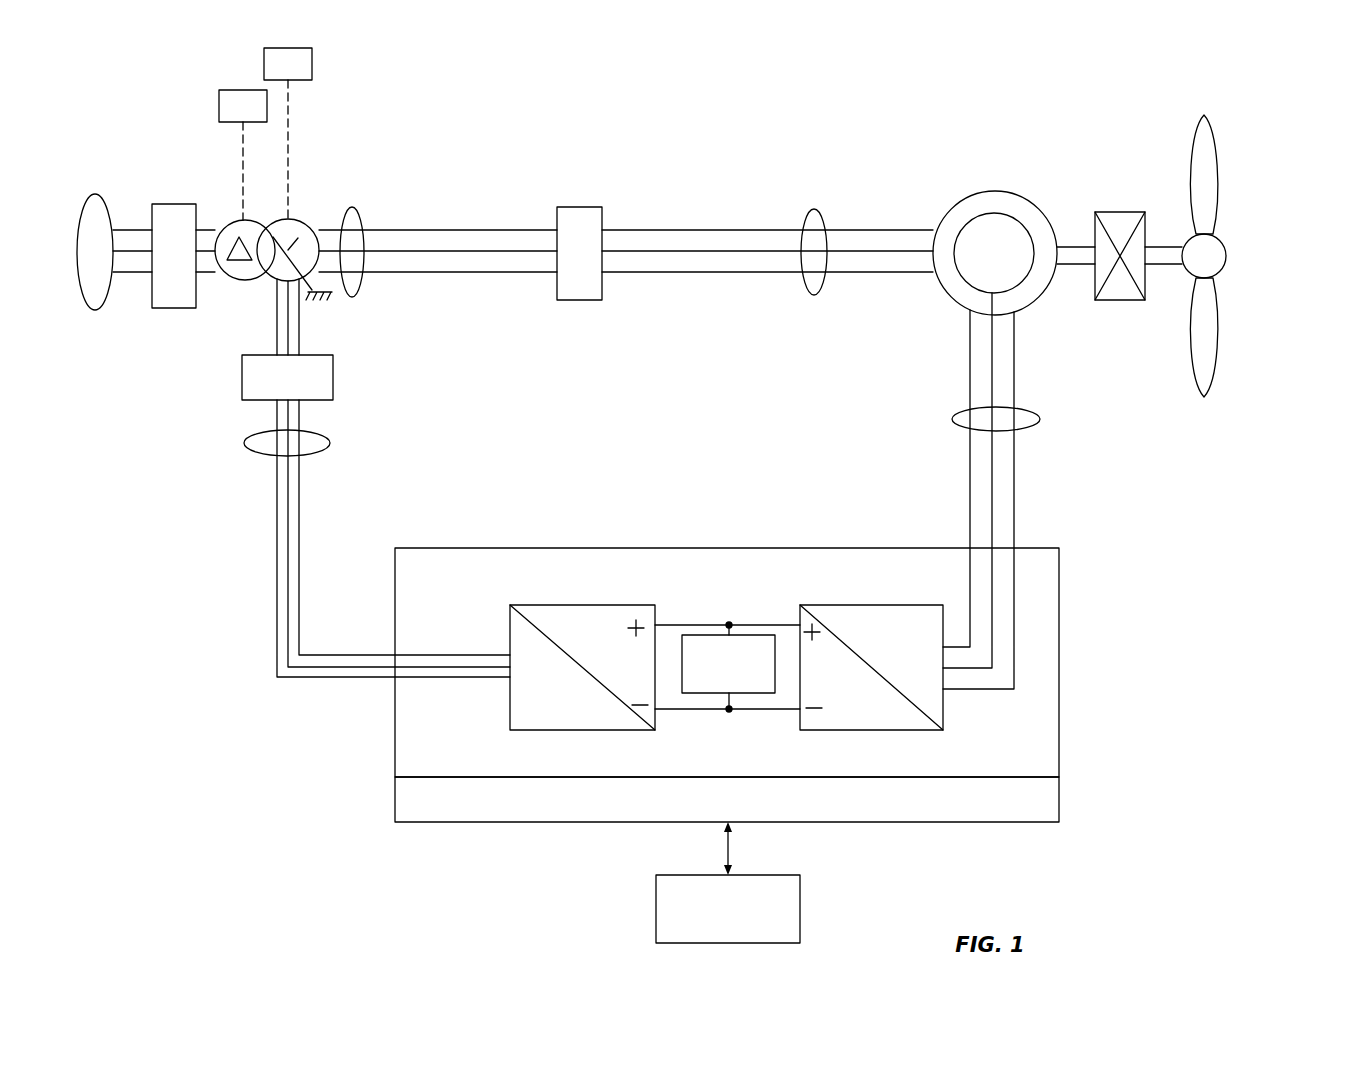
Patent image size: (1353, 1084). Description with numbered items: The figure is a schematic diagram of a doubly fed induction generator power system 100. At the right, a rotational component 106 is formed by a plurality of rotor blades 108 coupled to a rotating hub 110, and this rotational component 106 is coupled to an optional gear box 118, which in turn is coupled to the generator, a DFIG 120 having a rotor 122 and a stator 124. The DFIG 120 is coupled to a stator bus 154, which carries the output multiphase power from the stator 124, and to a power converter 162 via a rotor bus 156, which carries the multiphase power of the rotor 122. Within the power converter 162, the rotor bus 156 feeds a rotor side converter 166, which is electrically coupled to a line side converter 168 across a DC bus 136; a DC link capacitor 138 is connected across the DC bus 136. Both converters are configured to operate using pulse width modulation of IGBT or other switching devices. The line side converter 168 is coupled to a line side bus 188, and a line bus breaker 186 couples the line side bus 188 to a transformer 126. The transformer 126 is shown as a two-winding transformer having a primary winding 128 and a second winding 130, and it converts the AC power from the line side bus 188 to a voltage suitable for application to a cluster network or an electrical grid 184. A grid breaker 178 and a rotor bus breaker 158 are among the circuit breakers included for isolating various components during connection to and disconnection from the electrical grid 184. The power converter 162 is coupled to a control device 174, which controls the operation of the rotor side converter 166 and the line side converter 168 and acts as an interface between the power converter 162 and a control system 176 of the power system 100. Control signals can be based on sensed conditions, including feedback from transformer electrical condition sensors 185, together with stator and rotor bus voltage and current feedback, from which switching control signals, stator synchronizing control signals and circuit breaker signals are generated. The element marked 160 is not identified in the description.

The DFIG power system 100 is at (864, 116).
The rotational component 106 is at (1283, 180).
The rotor blades 108 is at (1218, 165).
The rotating hub 110 is at (1227, 258).
The gear box 118 is at (1120, 212).
The DFIG 120 is at (1006, 184).
The rotor 122 is at (985, 213).
The stator 124 is at (940, 225).
The transformer 126 is at (273, 214).
The primary winding 128 is at (305, 222).
The second winding 130 is at (238, 280).
The DC bus 136 is at (738, 625).
The DC link capacitor 138 is at (710, 693).
The stator bus 154 is at (814, 210).
The rotor bus 156 is at (1040, 419).
The rotor bus breaker 158 is at (580, 207).
The system bus 160 is at (352, 208).
The power converter 162 is at (1059, 625).
The rotor side converter 166 is at (945, 707).
The line side converter 168 is at (510, 712).
The control device 174 is at (1059, 808).
The control system 176 is at (800, 912).
The grid breaker 178 is at (170, 204).
The electrical grid 184 is at (100, 196).
The transformer electrical condition sensor 185 is at (265, 134).
The line bus breaker 186 is at (207, 360).
The line side bus 188 is at (245, 443).